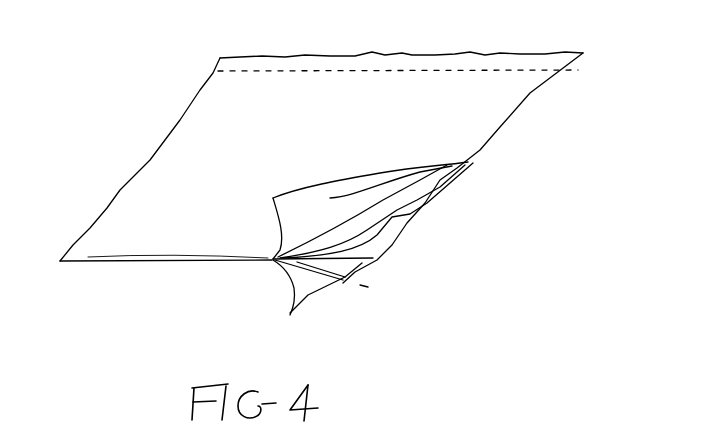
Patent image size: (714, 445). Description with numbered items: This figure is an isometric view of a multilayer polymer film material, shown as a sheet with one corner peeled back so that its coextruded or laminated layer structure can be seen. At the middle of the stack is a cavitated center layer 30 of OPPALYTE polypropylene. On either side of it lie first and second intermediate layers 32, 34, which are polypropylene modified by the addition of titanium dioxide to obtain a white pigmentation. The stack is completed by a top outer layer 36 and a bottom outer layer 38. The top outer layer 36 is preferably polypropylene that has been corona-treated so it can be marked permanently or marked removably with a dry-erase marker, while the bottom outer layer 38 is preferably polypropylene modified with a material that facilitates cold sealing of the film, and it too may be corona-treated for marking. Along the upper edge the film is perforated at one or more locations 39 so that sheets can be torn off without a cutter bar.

The cavitated center layer 30 is at (377, 242).
The first intermediate layer 32 is at (377, 222).
The second intermediate layer 34 is at (353, 272).
The top outer layer 36 is at (468, 162).
The bottom outer layer 38 is at (305, 295).
The perforated locations 39 is at (480, 69).